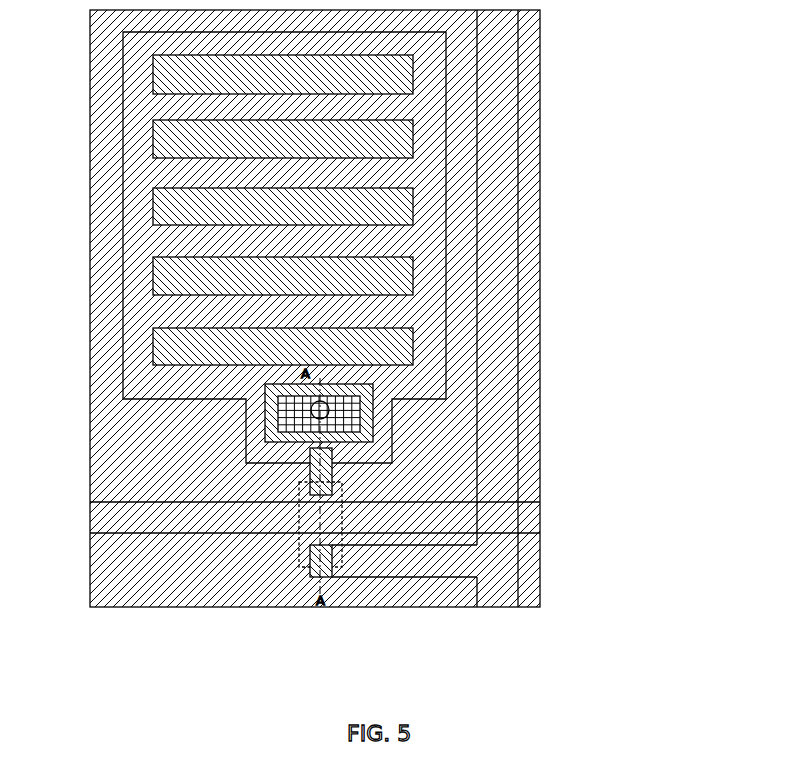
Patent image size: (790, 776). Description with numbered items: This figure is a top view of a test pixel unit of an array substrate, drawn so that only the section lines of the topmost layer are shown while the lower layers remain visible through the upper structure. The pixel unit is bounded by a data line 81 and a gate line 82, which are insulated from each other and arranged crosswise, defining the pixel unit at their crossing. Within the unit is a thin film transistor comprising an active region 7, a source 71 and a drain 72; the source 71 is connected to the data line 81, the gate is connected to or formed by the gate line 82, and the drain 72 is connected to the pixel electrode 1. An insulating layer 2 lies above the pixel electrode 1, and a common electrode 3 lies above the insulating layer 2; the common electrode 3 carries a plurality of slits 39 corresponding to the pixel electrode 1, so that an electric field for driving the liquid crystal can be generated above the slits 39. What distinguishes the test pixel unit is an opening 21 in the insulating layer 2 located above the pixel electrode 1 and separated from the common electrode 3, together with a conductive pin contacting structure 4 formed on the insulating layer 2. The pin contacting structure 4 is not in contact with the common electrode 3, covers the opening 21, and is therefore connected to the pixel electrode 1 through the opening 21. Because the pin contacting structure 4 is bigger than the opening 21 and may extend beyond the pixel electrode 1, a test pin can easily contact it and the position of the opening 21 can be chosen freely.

The pixel electrode 1 is at (446, 333).
The insulating layer 2 is at (413, 289).
The opening 21 is at (360, 420).
The common electrode 3 is at (533, 86).
The slit 39 is at (413, 224).
The pin contacting structure 4 is at (275, 412).
The active region 7 is at (342, 517).
The source 71 is at (340, 580).
The drain 72 is at (332, 470).
The data line 81 is at (533, 172).
The gate line 82 is at (150, 535).